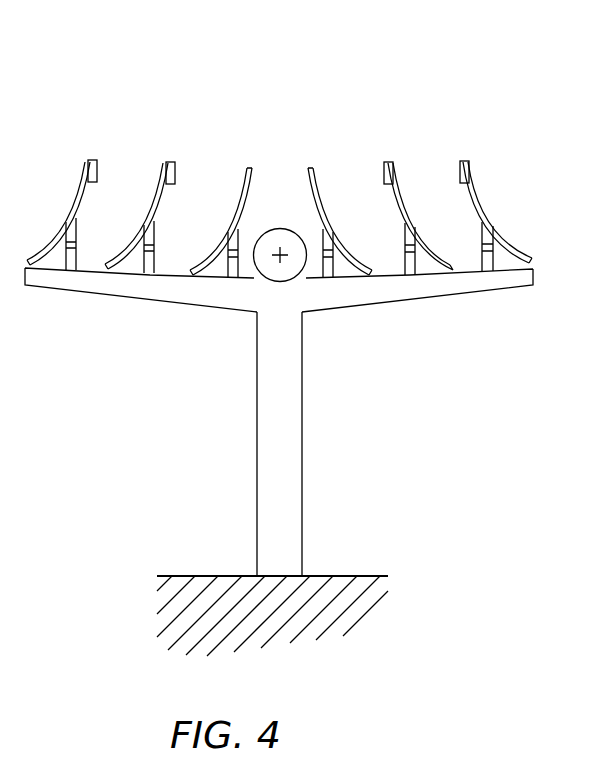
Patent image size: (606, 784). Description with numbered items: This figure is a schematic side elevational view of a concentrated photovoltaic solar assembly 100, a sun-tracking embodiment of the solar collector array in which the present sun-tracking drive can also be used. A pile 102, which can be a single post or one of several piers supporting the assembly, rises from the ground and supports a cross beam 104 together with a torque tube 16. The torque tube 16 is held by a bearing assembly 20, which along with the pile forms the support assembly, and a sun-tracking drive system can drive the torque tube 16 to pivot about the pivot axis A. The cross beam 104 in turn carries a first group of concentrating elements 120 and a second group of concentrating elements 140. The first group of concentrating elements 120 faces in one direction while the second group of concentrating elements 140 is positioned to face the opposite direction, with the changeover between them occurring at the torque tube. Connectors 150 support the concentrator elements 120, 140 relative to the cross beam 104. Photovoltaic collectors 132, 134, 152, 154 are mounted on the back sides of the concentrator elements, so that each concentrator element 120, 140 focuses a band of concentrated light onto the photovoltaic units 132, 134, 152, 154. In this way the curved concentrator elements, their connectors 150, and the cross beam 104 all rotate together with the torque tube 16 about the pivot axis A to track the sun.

The concentrated photovoltaic solar assembly 100 is at (272, 152).
The pile 102 is at (277, 422).
The cross beam 104 is at (422, 288).
The torque tube 16 is at (287, 228).
The bearing assembly 20 is at (302, 287).
The first group of concentrating elements 120 is at (120, 152).
The second group of concentrating elements 140 is at (443, 148).
The photovoltaic collector 132 is at (173, 159).
The photovoltaic collector 134 is at (78, 187).
The photovoltaic collector 152 is at (388, 158).
The photovoltaic collector 154 is at (465, 158).
The connector 150 is at (77, 247).
The pivot axis A is at (279, 256).